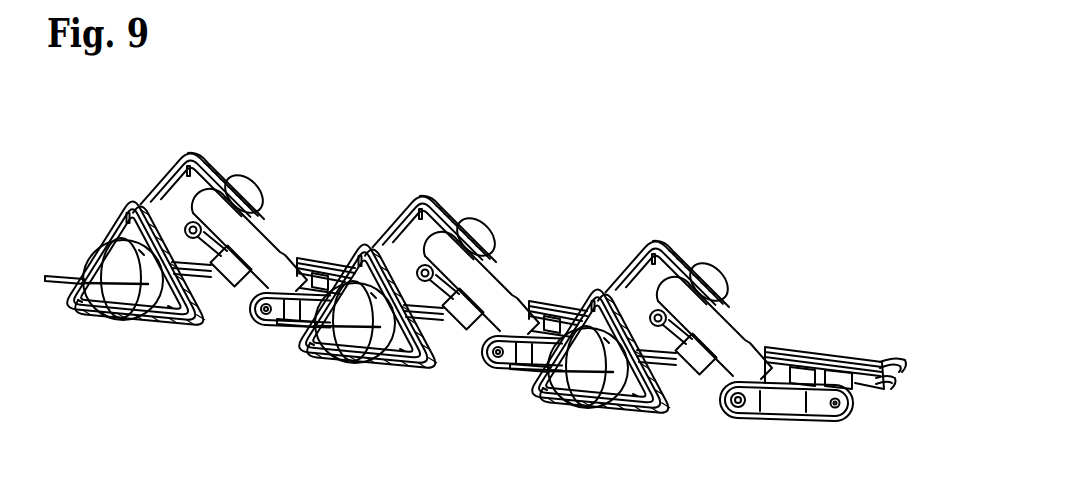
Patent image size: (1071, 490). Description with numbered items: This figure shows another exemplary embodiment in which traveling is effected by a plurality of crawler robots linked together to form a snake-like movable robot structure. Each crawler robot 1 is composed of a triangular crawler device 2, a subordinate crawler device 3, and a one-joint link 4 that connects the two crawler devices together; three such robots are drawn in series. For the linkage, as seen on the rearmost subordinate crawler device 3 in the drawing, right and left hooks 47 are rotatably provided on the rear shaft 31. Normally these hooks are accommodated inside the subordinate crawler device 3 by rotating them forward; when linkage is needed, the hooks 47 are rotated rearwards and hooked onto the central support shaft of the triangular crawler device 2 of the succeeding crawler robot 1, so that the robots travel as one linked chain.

The crawler robot 1 is at (281, 176).
The triangular crawler device 2 is at (226, 157).
The subordinate crawler device 3 is at (328, 250).
The one-joint link 4 is at (271, 222).
The rear shaft 31 is at (832, 421).
The hooks 47 is at (903, 363).